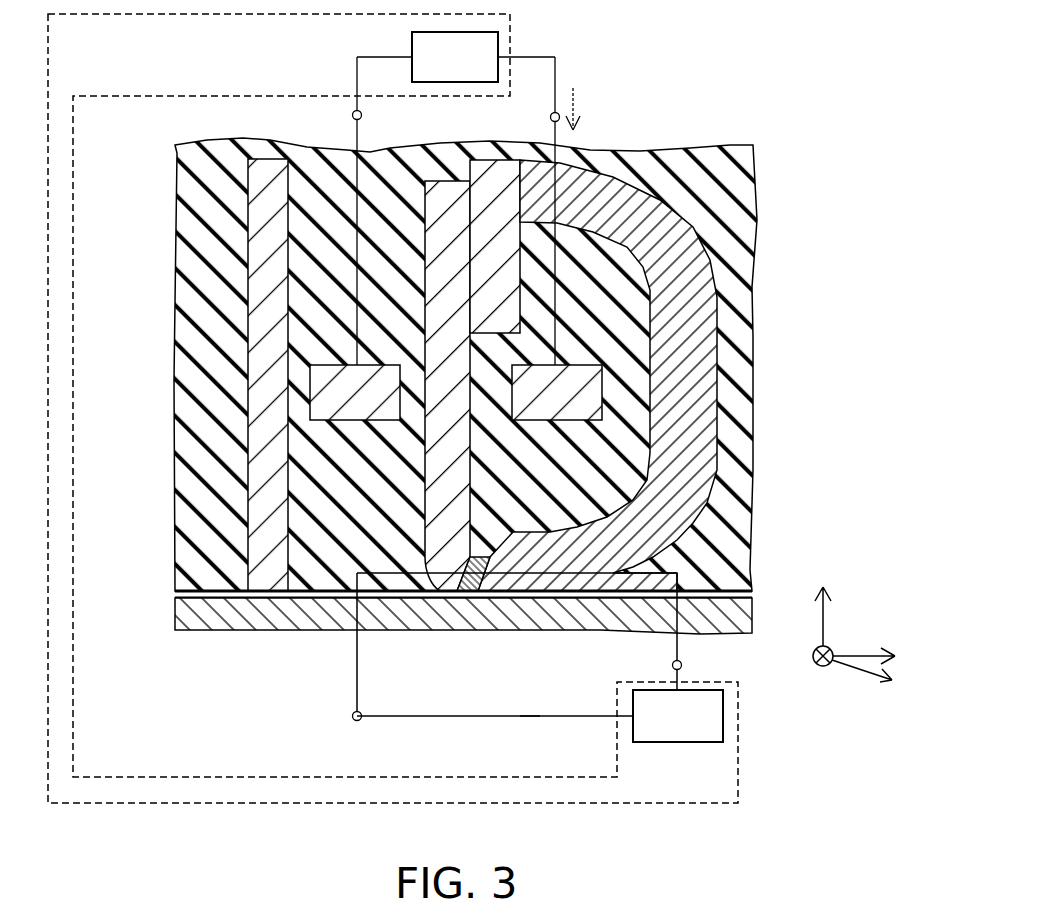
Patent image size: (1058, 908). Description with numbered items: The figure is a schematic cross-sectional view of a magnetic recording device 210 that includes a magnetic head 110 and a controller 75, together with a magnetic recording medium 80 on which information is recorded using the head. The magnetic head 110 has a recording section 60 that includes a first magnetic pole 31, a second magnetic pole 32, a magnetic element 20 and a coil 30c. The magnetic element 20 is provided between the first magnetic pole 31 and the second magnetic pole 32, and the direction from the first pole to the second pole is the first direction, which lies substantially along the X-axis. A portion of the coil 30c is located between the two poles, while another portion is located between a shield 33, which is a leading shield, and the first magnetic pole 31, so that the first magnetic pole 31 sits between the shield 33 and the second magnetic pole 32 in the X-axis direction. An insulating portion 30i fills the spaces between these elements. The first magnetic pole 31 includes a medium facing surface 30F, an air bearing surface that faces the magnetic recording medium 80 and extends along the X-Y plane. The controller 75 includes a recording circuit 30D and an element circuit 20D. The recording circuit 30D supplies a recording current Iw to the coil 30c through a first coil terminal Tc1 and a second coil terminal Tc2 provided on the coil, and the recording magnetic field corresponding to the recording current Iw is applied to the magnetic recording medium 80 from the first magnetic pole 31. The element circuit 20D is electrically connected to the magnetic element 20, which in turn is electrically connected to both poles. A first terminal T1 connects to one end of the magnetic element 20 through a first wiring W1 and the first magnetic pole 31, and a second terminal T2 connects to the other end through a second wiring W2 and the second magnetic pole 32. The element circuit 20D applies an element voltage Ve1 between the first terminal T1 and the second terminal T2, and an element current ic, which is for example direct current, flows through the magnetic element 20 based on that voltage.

The magnetic recording device 210 is at (866, 94).
The magnetic head 110 is at (759, 116).
The controller 75 is at (742, 773).
The recording section 60 is at (785, 161).
The insulating portion 30i is at (323, 320).
The shield 33 is at (258, 500).
The first magnetic pole 31 is at (453, 197).
The second magnetic pole 32 is at (705, 477).
The medium facing surface 30F is at (452, 596).
The coil 30c is at (308, 388).
The magnetic element 20 is at (465, 596).
The magnetic recording medium 80 is at (185, 613).
The recording circuit 30D is at (500, 37).
The first coil terminal Tc1 is at (350, 116).
The second coil terminal Tc2 is at (550, 117).
The recording current Iw is at (578, 101).
The first wiring W1 is at (357, 673).
The second wiring W2 is at (675, 653).
The first terminal T1 is at (352, 716).
The second terminal T2 is at (684, 666).
The element circuit 20D is at (725, 712).
The element current ic is at (455, 717).
The element voltage Ve1 is at (525, 717).